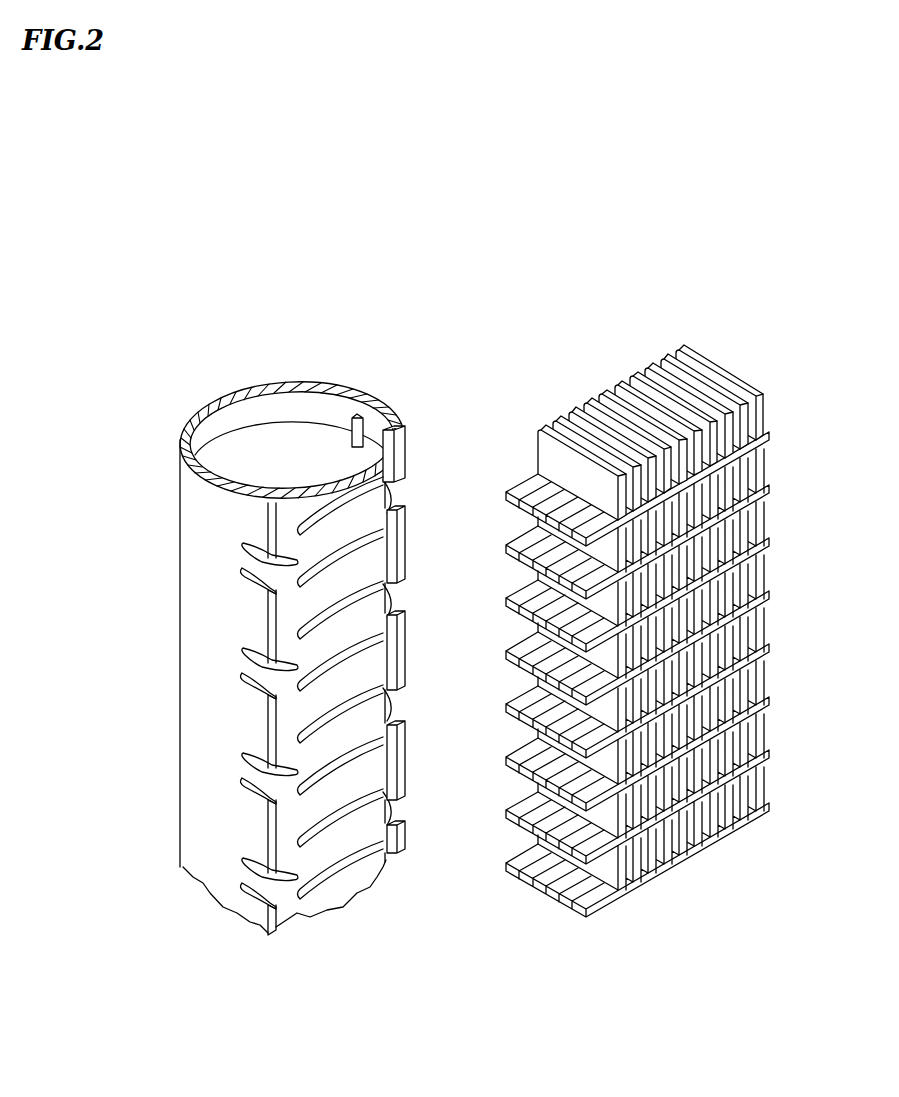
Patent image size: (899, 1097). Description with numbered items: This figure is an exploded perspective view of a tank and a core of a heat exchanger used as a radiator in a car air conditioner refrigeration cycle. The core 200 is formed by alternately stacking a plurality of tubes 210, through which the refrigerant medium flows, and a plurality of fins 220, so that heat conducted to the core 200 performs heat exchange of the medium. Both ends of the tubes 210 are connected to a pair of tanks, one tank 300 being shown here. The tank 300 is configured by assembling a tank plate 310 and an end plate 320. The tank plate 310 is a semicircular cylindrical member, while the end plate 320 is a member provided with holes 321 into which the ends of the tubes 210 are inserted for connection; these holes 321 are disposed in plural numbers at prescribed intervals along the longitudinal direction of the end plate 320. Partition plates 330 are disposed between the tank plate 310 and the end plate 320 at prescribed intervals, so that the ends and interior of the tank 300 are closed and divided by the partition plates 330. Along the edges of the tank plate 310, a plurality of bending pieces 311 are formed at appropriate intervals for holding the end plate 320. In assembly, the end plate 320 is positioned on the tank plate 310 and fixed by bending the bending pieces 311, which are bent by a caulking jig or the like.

The core 200 is at (600, 650).
The tube 210 is at (520, 688).
The fin 220 is at (565, 408).
The tank 300 is at (274, 637).
The tank plate 310 is at (180, 483).
The bending piece 311 is at (266, 563).
The end plate 320 is at (352, 580).
The hole 321 is at (352, 768).
The partition plate 330 is at (277, 440).